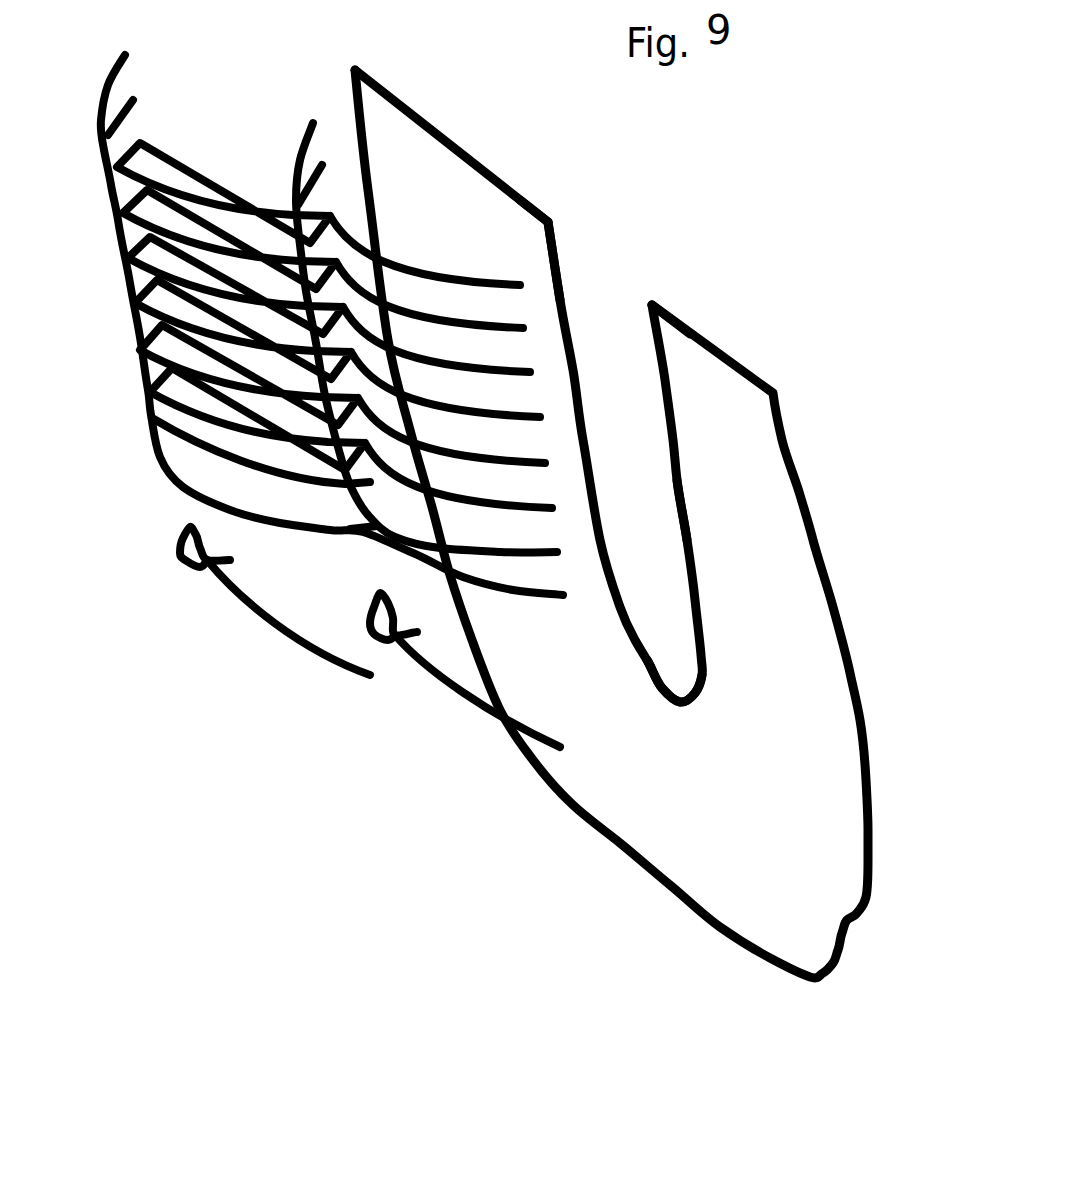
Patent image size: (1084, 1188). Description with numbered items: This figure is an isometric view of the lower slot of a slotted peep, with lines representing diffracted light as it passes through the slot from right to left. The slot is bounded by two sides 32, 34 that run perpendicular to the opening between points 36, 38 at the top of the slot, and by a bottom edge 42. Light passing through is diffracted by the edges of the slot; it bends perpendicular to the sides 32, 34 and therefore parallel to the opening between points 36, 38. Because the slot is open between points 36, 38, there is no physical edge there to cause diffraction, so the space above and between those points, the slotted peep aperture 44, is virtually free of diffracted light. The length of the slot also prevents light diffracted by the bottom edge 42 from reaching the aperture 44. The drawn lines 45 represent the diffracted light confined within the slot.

The side 32 is at (545, 254).
The side 34 is at (702, 518).
The point 36 is at (569, 223).
The point 38 is at (652, 293).
The bottom edge 42 is at (702, 702).
The slotted peep aperture 44 is at (611, 524).
The coiled strands 45 is at (82, 79).